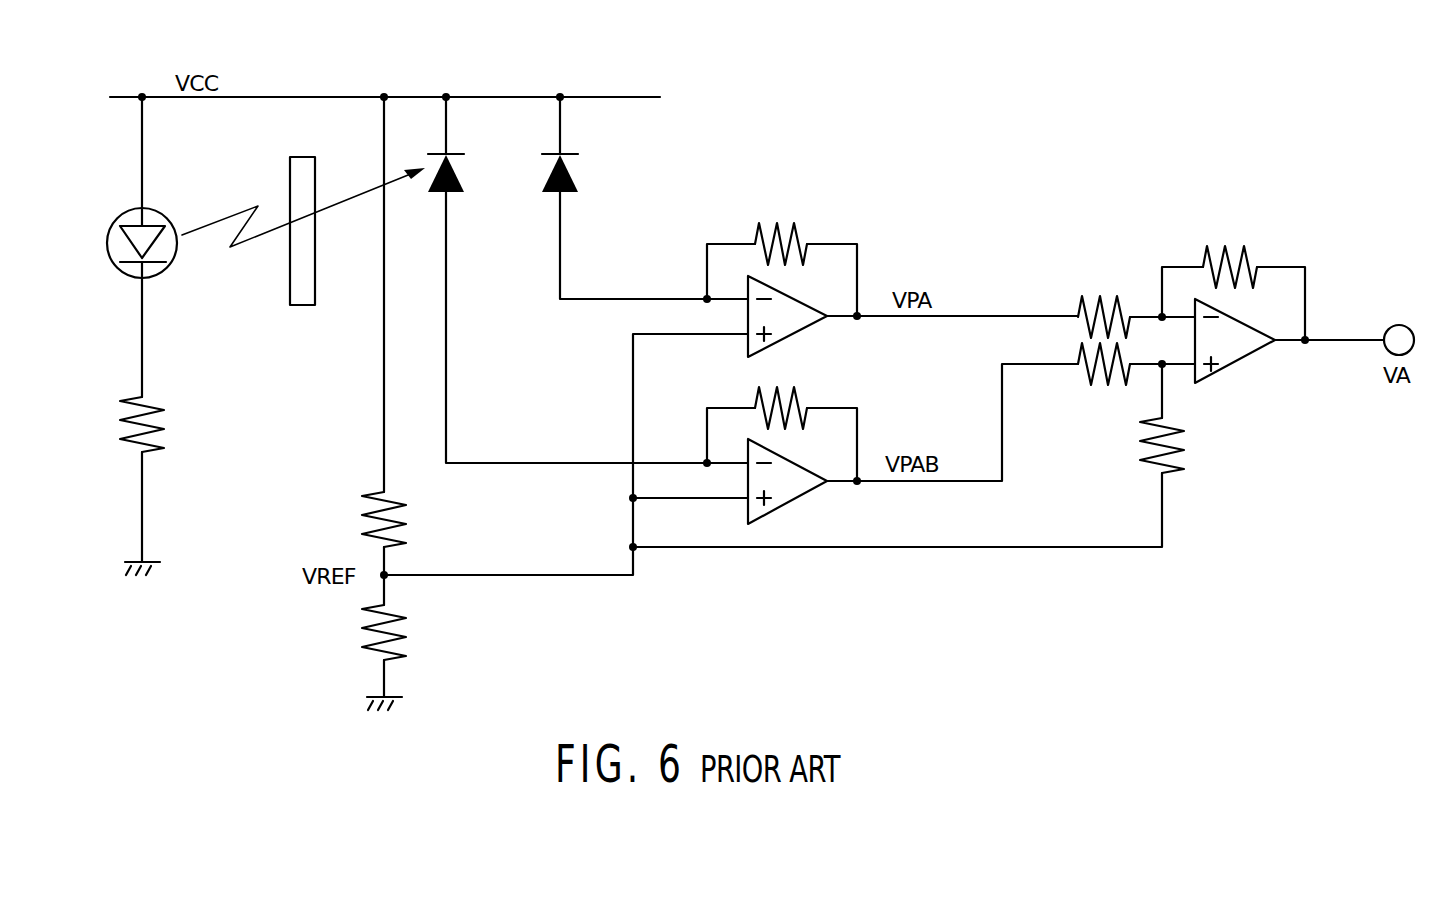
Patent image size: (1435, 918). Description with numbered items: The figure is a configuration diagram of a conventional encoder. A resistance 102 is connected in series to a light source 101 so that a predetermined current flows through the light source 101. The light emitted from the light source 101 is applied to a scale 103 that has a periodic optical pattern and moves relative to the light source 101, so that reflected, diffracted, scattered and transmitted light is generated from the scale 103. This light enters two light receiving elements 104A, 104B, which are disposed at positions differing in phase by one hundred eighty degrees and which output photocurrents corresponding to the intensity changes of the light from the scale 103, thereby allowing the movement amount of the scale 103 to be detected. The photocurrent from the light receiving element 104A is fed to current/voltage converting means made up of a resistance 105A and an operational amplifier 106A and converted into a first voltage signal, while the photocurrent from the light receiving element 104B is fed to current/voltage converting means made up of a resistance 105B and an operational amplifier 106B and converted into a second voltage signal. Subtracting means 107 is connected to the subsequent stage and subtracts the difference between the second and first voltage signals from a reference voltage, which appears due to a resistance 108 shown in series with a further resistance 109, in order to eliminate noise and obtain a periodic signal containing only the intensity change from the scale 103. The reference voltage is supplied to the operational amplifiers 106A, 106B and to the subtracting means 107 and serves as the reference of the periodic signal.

The light source 101 is at (101, 220).
The resistance 102 is at (114, 404).
The scale 103 is at (302, 308).
The light receiving element 104A is at (582, 166).
The light receiving element 104B is at (468, 166).
The resistance 105A is at (785, 216).
The resistance 105B is at (808, 396).
The operational amplifier 106A is at (890, 263).
The operational amplifier 106B is at (855, 435).
The subtracting means 107 is at (1252, 326).
The resistance 108 is at (418, 548).
The resistor 109 is at (418, 657).